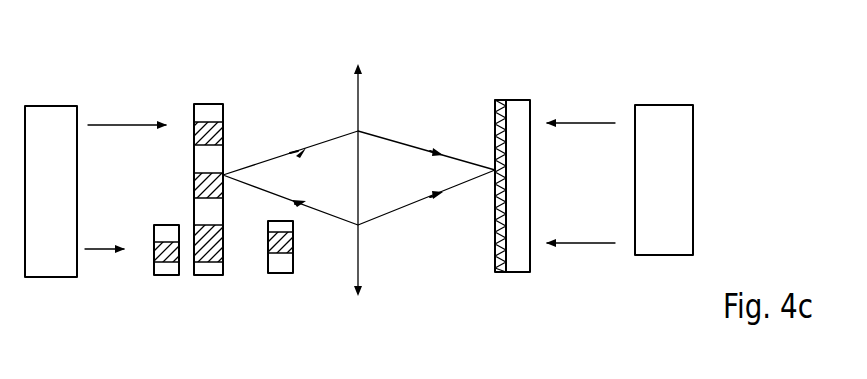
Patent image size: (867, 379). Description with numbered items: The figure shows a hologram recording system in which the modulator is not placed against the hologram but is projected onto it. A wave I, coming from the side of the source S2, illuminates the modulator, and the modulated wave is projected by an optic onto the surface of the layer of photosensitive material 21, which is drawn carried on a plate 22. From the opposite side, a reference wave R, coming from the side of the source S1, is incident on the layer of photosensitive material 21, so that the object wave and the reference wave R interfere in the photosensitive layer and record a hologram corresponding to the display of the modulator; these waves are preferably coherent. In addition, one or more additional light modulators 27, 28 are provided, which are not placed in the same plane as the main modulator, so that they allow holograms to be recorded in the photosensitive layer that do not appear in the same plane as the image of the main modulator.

The layer of photosensitive material 21 is at (503, 98).
The substrate / carrier plate 22 is at (523, 99).
The additional light modulator 27 is at (166, 268).
The additional light modulator 28 is at (282, 265).
The first light source S1 is at (663, 242).
The second light source S2 is at (51, 125).
The illumination wave I is at (130, 137).
The reference wave R is at (577, 223).